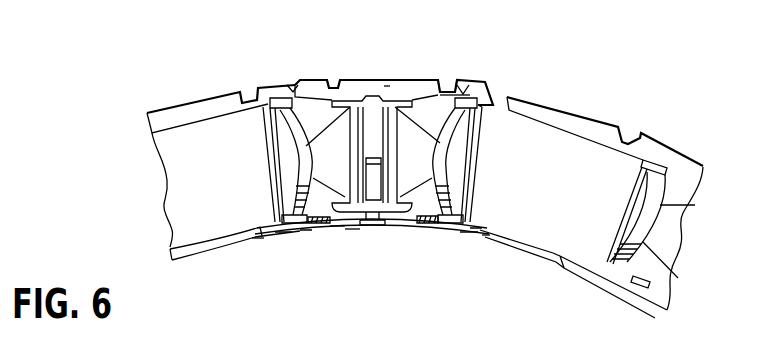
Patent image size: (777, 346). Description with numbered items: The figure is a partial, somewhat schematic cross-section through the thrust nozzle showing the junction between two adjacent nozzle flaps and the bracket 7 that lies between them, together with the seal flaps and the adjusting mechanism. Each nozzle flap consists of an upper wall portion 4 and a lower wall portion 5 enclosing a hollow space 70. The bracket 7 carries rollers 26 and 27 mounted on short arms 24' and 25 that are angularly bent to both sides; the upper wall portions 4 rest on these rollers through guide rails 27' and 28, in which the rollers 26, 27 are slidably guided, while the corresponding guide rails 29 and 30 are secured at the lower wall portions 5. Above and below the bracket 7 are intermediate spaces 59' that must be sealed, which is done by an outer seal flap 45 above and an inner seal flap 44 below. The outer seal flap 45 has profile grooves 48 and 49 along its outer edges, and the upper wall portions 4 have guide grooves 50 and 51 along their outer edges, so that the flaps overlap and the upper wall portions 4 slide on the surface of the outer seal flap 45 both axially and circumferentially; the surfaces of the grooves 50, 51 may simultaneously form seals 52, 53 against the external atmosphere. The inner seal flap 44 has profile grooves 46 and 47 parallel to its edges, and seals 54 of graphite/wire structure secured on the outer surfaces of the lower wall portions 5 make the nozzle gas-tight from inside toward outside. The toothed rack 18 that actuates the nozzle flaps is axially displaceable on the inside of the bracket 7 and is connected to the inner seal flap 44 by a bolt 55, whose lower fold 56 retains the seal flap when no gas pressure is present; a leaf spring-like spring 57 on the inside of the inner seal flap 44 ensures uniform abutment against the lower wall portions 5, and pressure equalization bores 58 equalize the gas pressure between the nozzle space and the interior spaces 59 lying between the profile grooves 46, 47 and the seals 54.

The upper wall portion 4 is at (181, 124).
The hollow space 70 is at (203, 177).
The guide rail 28 is at (277, 100).
The profile groove 48 is at (290, 87).
The guide groove 50 is at (329, 84).
The seal 52 is at (343, 85).
The outer seal flap 45 is at (383, 87).
The bracket 7 is at (387, 84).
The guide groove 51 is at (415, 83).
The seal 53 is at (417, 85).
The intermediate space 59' is at (464, 57).
The profile groove 49 is at (455, 83).
The guide rail 27' is at (490, 82).
The roller 27 is at (352, 164).
The short arm 25 is at (335, 127).
The short arm 24' is at (420, 151).
The roller 26 is at (447, 138).
The guide rail 29 is at (440, 196).
The guide rail 30 is at (315, 200).
The toothed rack 18 is at (374, 186).
The lower wall portion 5 is at (280, 224).
The profile groove 46 is at (258, 238).
The pressure equalization bore 58 is at (283, 247).
The interior space 59 is at (395, 240).
The inner seal flap 44 is at (290, 240).
The seal 54 is at (316, 225).
The leaf spring-like spring 57 is at (336, 233).
The bolt 55 is at (344, 232).
The fold 56 is at (388, 233).
The profile groove 47 is at (484, 234).